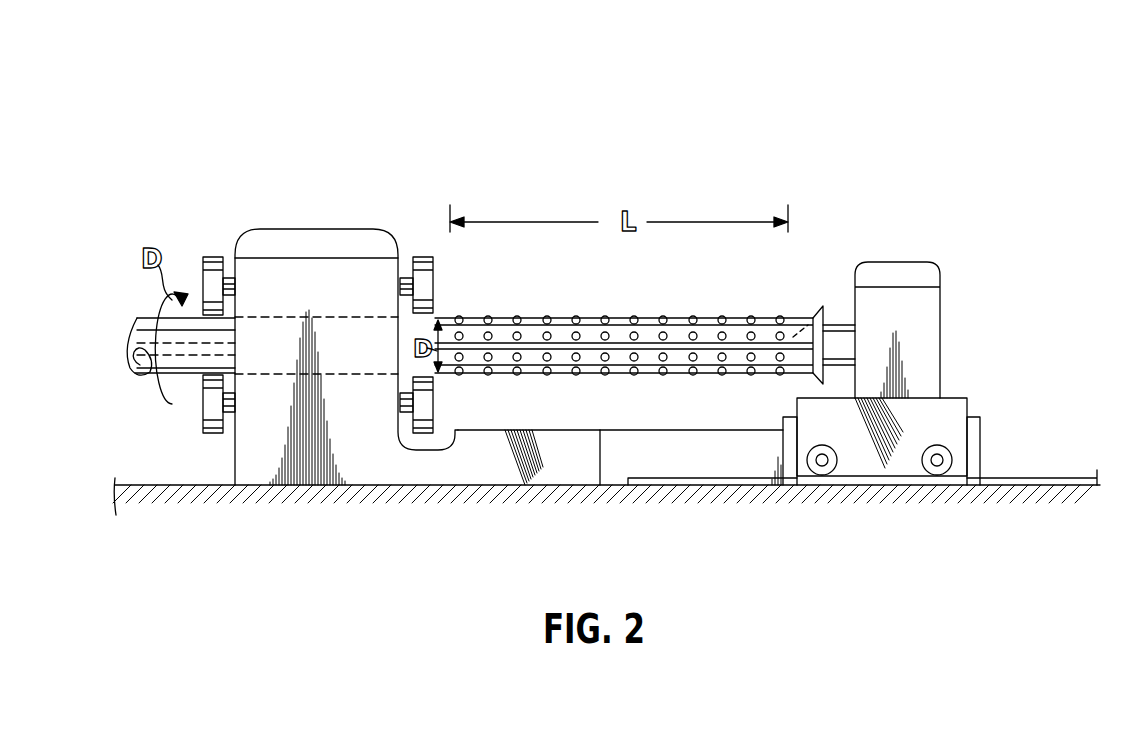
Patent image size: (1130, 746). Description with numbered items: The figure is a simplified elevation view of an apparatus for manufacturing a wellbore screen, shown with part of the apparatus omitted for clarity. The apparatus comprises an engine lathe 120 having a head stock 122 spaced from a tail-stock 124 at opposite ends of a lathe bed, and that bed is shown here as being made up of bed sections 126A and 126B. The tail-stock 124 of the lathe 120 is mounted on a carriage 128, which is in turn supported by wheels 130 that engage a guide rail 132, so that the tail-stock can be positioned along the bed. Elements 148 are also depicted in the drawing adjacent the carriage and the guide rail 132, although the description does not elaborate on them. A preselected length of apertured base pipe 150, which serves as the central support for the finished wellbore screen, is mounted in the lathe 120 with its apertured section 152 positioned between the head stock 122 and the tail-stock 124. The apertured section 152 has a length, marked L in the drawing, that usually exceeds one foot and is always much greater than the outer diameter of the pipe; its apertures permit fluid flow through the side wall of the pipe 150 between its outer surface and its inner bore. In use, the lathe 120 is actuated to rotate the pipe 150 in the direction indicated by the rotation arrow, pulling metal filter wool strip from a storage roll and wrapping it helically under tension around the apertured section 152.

The engine lathe 120 is at (716, 301).
The head stock 122 is at (270, 467).
The tail-stock 124 is at (930, 365).
The lathe bed section 126A is at (477, 470).
The lathe bed section 126B is at (607, 470).
The carriage 128 is at (953, 415).
The wheels 130 is at (927, 463).
The guide rail 132 is at (723, 480).
The stops 148 is at (790, 420).
The apertured base pipe 150 is at (192, 362).
The apertured section 152 is at (557, 317).